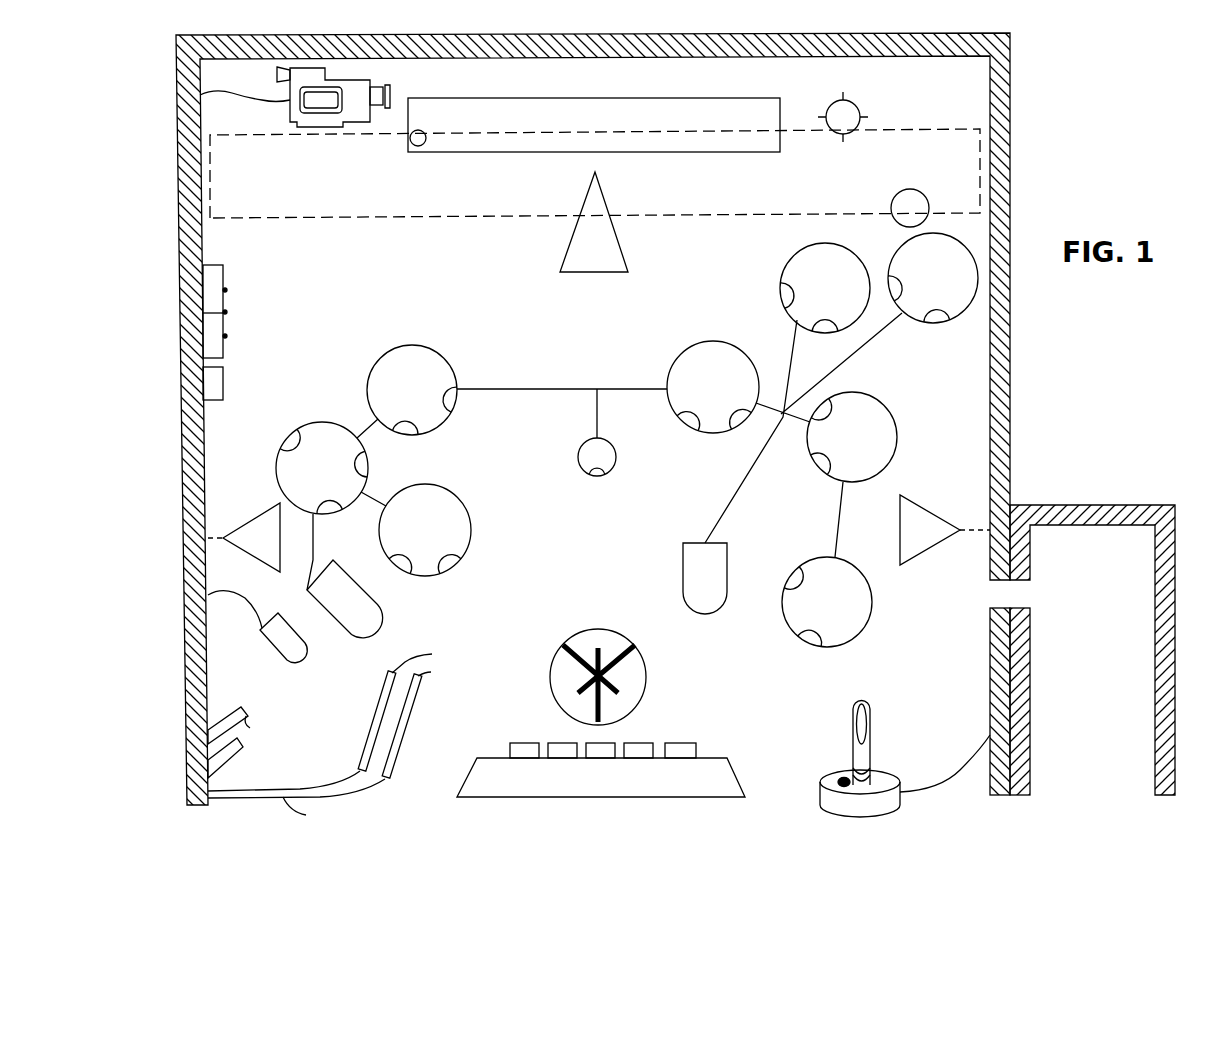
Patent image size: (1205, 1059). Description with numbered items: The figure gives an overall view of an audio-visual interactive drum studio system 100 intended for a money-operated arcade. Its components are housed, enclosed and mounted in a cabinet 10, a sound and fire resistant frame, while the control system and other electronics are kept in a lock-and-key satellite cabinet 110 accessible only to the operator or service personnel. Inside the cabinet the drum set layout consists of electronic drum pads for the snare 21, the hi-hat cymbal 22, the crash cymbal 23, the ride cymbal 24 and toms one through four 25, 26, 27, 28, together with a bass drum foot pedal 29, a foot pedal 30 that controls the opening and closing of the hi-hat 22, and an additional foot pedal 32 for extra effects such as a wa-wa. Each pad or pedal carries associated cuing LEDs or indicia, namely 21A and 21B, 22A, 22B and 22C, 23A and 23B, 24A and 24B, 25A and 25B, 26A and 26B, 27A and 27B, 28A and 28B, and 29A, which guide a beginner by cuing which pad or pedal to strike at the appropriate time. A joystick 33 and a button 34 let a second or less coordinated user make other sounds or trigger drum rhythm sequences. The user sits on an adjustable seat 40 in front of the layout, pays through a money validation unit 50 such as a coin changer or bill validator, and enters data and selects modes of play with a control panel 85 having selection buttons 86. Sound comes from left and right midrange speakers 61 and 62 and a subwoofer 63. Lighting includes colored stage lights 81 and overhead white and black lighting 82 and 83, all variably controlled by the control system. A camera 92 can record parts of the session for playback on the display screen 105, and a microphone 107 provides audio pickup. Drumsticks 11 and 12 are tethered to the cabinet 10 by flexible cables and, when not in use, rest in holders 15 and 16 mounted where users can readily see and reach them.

The audio-visual interactive drum studio system 100 is at (1094, 103).
The cabinet 10 is at (1010, 114).
The satellite cabinet 110 is at (1108, 505).
The overhead white lighting 82 is at (861, 112).
The overhead black lighting 83 is at (891, 209).
The microphone 107 is at (424, 134).
The display screen 105 is at (430, 152).
The camera 92 is at (322, 127).
The control panel 85 is at (203, 268).
The selection buttons 86 is at (224, 313).
The money validation unit 50 is at (210, 378).
The subwoofer 63 is at (614, 231).
The crash cymbal 23 is at (802, 250).
The crash cymbal LED 23A is at (824, 334).
The crash cymbal LED 23B is at (779, 297).
The ride cymbal 24 is at (955, 240).
The ride cymbal LED 24A is at (937, 325).
The ride cymbal LED 24B is at (889, 268).
The tom one 25 is at (452, 370).
The tom one LED 25A is at (416, 435).
The tom one LED 25B is at (458, 400).
The tom two 26 is at (679, 356).
The tom two LED 26A is at (686, 431).
The tom two LED 26B is at (737, 430).
The tom three 27 is at (884, 404).
The tom three LED 27A is at (823, 408).
The tom three LED 27B is at (815, 465).
The tom four 28 is at (803, 640).
The tom four LED 28A is at (790, 580).
The tom four LED 28B is at (808, 648).
The bass drum foot pedal 29 is at (727, 590).
The bass drum pedal LED 29A is at (593, 477).
The hi-hat cymbal 22 is at (324, 423).
The hi-hat LED 22A is at (330, 513).
The hi-hat LED 22B is at (370, 462).
The hi-hat LED 22C is at (284, 447).
The snare 21 is at (463, 505).
The snare LED 21A is at (400, 572).
The snare LED 21B is at (450, 572).
The left midrange speaker 61 is at (250, 553).
The right midrange speaker 62 is at (925, 551).
The hi-hat foot pedal 30 is at (377, 628).
The additional foot pedal 32 is at (304, 658).
The adjustable seat 40 is at (650, 702).
The colored stage lights 81 is at (522, 797).
The drumstick holder 15 is at (238, 712).
The drumstick holder 16 is at (240, 745).
The drumstick 12 is at (376, 720).
The drumstick 11 is at (405, 720).
The joystick 33 is at (871, 737).
The button 34 is at (840, 778).